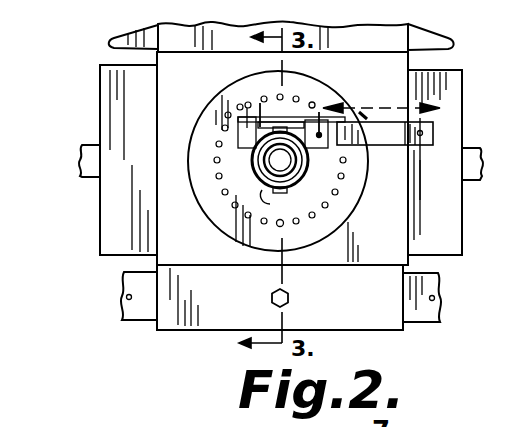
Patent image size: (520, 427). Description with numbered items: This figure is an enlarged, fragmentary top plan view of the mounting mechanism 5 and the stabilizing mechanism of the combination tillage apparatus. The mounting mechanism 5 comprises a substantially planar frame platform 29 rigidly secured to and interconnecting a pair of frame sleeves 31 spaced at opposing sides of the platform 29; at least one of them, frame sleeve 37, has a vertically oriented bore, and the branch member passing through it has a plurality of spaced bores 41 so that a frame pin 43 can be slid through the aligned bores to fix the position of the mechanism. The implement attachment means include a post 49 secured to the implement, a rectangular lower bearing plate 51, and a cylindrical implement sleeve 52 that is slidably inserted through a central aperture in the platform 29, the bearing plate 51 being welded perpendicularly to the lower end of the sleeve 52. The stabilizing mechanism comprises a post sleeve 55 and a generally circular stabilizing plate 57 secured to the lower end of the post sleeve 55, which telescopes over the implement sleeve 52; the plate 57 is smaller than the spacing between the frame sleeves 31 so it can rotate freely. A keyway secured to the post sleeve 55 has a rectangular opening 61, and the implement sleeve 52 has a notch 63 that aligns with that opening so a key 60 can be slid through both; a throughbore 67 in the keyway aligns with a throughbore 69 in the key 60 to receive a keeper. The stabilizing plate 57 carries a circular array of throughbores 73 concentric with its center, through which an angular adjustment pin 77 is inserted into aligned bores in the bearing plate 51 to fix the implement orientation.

The mounting mechanism 5 is at (180, 330).
The frame platform 29 is at (394, 241).
The frame sleeves 31 is at (388, 38).
The frame sleeve 37 is at (390, 322).
The bores 41 is at (125, 300).
The frame pin 43 is at (274, 296).
The post 49 is at (300, 178).
The bearing plate 51 is at (462, 77).
The implement sleeve 52 is at (258, 166).
The post sleeve 55 is at (278, 192).
The stabilizing plate 57 is at (222, 108).
The key 60 is at (428, 146).
The opening 61 is at (260, 104).
The notch 63 is at (262, 132).
The throughbore 67 is at (322, 150).
The throughbore 69 is at (426, 134).
The throughbores 73 is at (318, 96).
The angular adjustment pin 77 is at (284, 226).